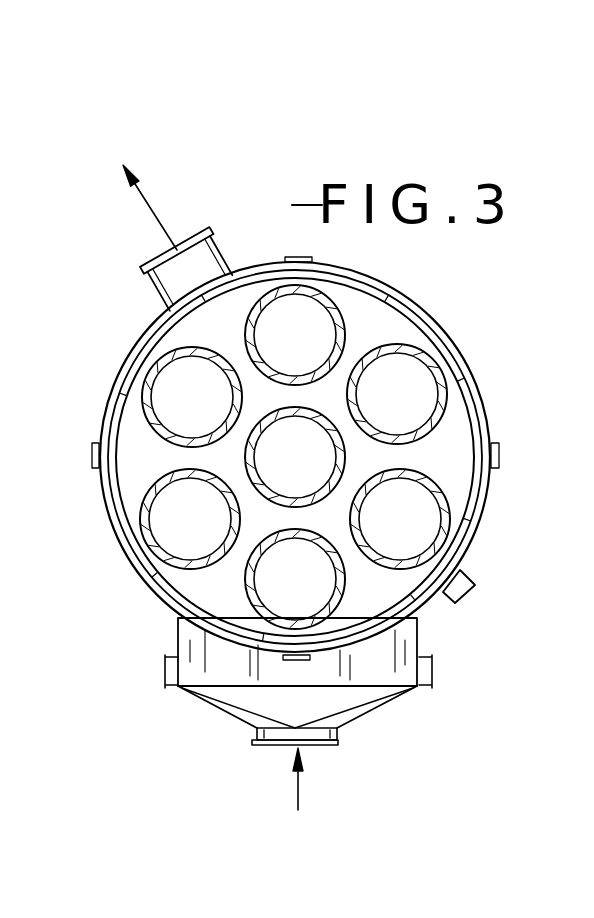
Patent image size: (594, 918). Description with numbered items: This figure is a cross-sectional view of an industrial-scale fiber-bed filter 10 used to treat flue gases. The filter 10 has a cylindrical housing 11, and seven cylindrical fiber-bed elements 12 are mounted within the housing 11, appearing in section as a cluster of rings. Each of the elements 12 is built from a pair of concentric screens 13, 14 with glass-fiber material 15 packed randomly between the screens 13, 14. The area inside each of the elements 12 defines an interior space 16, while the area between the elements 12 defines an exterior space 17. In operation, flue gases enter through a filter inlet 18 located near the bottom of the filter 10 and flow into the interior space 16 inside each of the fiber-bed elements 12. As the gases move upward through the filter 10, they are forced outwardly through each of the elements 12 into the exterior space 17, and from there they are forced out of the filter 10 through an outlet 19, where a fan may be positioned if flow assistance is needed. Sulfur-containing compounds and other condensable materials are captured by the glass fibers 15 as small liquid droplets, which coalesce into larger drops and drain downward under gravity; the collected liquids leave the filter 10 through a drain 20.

The fiber-bed filter 10 is at (455, 115).
The cylindrical housing 11 is at (480, 383).
The cylindrical fiber-bed elements 12 is at (140, 478).
The concentric screen 13 is at (334, 338).
The concentric screen 14 is at (340, 338).
The glass-fiber material 15 is at (268, 300).
The interior space 16 is at (410, 396).
The exterior space 17 is at (213, 580).
The filter inlet 18 is at (277, 747).
The outlet 19 is at (163, 315).
The drain 20 is at (473, 590).